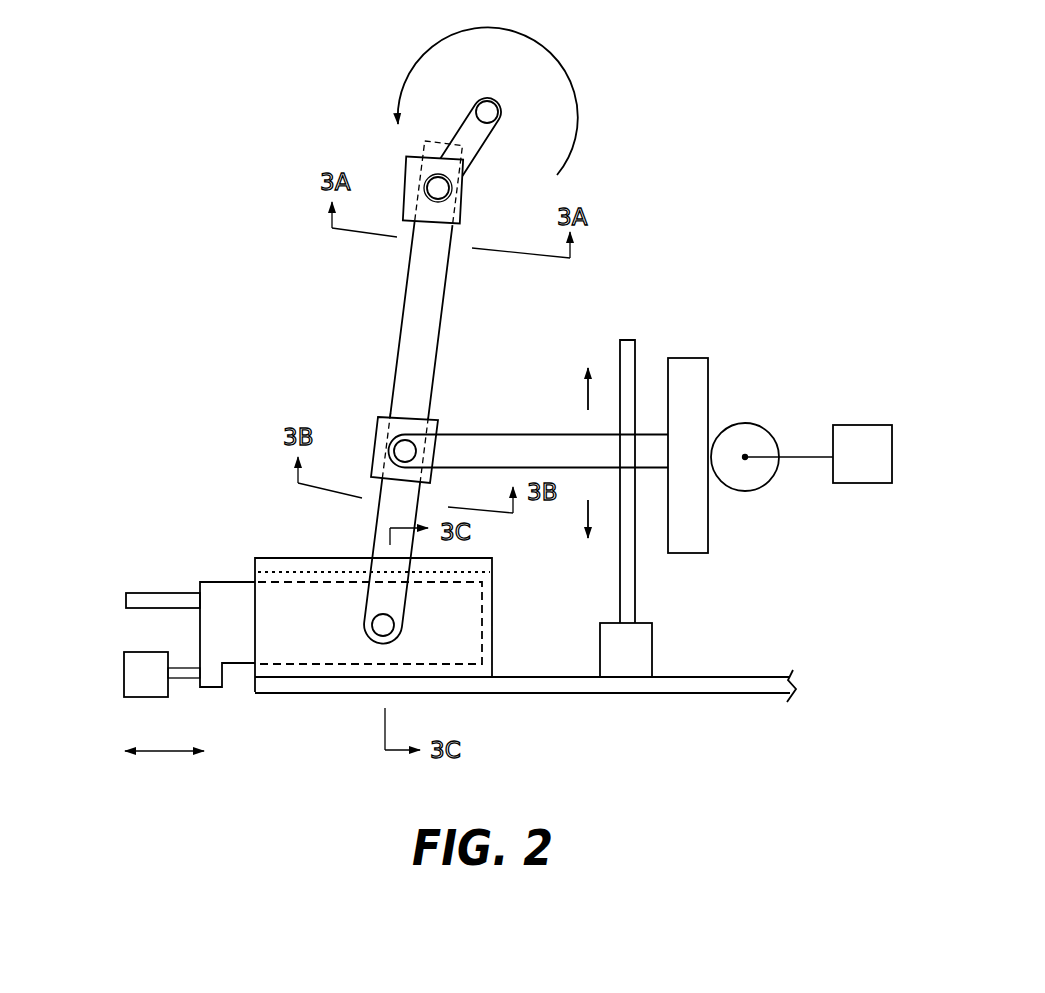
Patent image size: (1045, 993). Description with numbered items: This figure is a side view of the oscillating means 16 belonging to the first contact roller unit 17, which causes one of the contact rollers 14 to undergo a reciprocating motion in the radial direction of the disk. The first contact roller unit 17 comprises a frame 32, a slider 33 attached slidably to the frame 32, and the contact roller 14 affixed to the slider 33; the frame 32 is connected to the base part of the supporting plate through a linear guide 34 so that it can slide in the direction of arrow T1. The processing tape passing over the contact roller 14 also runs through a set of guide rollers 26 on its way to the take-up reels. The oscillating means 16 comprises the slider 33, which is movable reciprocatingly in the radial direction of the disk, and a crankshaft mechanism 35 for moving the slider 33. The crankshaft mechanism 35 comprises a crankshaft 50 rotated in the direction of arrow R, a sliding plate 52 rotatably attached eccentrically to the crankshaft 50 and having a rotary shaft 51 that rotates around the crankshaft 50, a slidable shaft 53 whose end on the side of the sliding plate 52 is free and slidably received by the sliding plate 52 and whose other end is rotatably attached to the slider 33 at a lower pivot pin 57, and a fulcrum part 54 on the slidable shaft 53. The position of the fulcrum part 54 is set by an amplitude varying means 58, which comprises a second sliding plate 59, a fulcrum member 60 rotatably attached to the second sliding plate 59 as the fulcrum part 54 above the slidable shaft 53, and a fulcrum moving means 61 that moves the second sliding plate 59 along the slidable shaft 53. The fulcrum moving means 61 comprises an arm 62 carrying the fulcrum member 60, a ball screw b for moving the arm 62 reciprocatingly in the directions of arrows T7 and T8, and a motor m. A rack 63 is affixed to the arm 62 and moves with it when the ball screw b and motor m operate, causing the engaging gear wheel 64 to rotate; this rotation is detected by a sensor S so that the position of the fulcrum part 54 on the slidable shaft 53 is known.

The contact roller 14 is at (124, 664).
The oscillating means 16 is at (172, 192).
The first contact roller unit 17 is at (158, 517).
The guide rollers 26 is at (127, 593).
The frame 32 is at (330, 558).
The slider 33 is at (240, 663).
The linear guide 34 is at (294, 571).
The crankshaft mechanism 35 is at (705, 220).
The crankshaft 50 is at (498, 113).
The rotary shaft 51 is at (436, 191).
The sliding plate 52 is at (405, 174).
The slidable shaft 53 is at (444, 294).
The fulcrum part 54 is at (391, 441).
The lower pivot pin 57 is at (383, 625).
The amplitude varying means 58 is at (685, 277).
The second sliding plate 59 is at (386, 417).
The fulcrum member 60 is at (405, 450).
The fulcrum moving means 61 is at (777, 587).
The arm 62 is at (524, 435).
The rack 63 is at (684, 358).
The gear wheel 64 is at (745, 422).
The sensor S is at (862, 454).
The ball screw b is at (635, 578).
The motor m is at (626, 650).